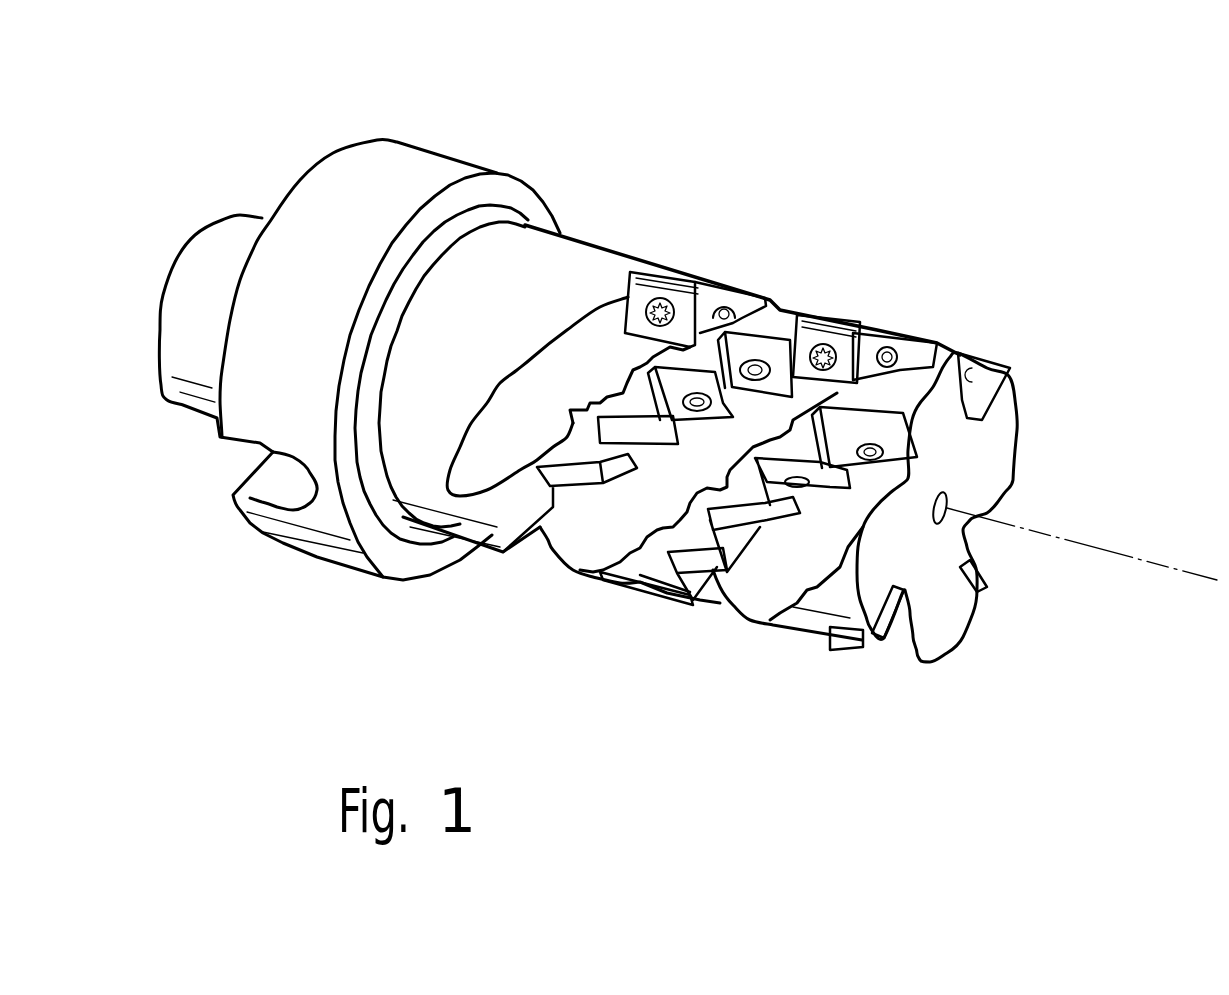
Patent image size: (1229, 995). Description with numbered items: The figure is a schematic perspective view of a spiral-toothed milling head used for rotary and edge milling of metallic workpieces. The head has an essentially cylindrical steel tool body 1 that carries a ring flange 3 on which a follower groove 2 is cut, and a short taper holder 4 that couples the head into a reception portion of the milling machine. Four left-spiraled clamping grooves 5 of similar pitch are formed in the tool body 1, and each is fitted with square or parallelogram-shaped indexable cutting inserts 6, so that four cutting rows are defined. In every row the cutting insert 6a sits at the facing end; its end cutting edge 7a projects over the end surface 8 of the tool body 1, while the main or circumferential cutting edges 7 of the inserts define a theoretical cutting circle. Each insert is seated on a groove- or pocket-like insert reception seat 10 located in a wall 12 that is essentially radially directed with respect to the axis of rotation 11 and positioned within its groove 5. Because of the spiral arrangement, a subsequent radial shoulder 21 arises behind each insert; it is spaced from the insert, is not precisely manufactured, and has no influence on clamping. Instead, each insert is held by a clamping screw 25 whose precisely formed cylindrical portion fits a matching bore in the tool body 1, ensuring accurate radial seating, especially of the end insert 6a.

The tool body 1 is at (513, 268).
The follower groove 2 is at (250, 458).
The flange 3 is at (378, 178).
The short taper holder 4 is at (228, 238).
The spiral clamping groove 5 is at (975, 540).
The indexable cutting insert 6 is at (655, 298).
The end cutting insert 6a is at (850, 400).
The main or circumferential cutting edge 7 is at (740, 287).
The end cutting edge 7a is at (1000, 385).
The end surface 8 is at (985, 448).
The insert reception seat 10 is at (880, 405).
The axis of rotation 11 is at (1183, 572).
The wall 12 is at (600, 325).
The radial shoulder 21 is at (797, 497).
The clamping screw 25 is at (693, 273).